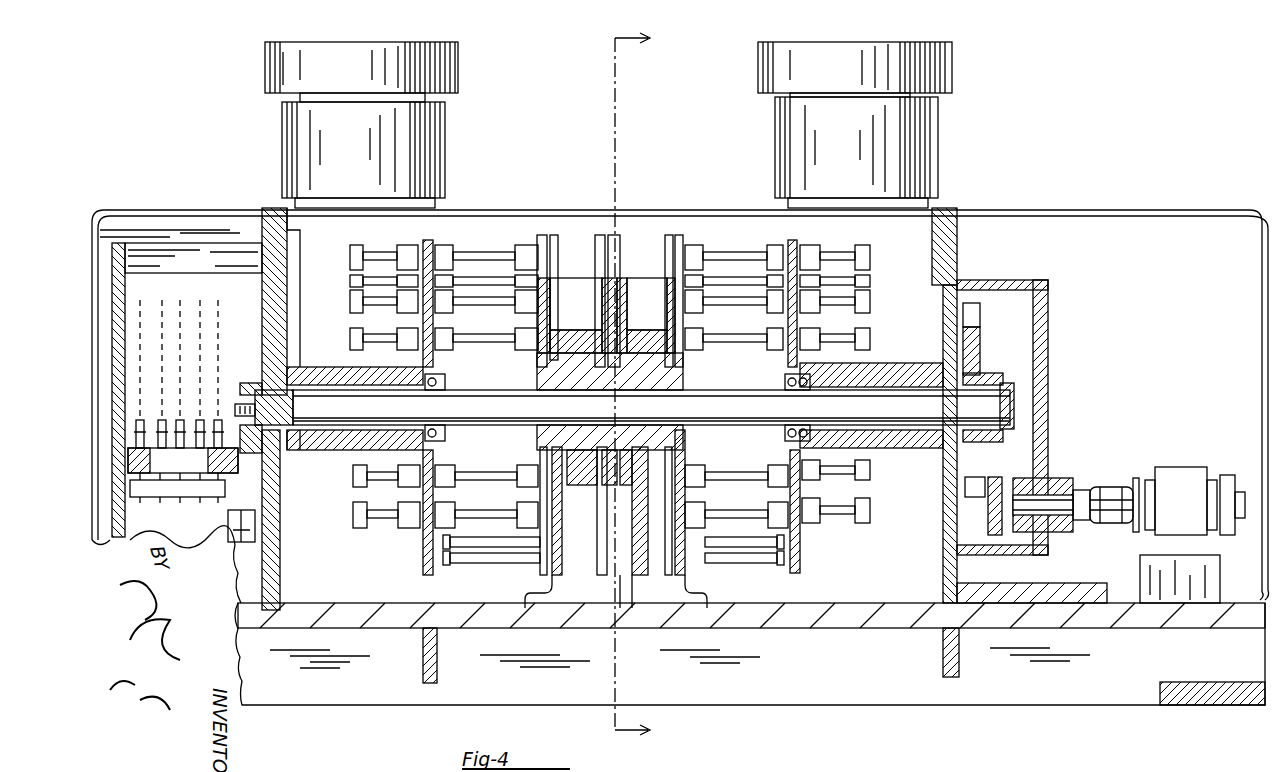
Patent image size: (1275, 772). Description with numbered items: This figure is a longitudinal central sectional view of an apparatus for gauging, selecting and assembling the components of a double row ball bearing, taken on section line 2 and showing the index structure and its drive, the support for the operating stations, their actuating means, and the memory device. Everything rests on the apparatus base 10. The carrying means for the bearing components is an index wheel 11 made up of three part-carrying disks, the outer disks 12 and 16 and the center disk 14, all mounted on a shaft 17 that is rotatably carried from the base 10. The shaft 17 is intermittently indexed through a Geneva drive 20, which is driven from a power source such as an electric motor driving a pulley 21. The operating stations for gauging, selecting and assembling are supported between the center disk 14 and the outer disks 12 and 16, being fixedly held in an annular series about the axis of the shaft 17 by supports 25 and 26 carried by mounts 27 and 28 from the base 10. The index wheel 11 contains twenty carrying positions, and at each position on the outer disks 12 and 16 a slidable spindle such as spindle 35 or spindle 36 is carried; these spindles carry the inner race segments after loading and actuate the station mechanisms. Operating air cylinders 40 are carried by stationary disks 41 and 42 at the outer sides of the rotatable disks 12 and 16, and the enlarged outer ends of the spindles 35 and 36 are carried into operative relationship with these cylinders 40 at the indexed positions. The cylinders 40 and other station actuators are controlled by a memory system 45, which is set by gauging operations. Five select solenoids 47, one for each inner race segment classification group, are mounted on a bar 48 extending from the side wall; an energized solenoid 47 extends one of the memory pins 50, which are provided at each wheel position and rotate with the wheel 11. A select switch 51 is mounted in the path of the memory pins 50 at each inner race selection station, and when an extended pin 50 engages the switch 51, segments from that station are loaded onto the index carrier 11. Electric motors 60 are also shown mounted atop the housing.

The section line 2 is at (641, 387).
The apparatus base 10 is at (890, 690).
The index wheel 11 is at (514, 583).
The part-carrying disk 12 is at (547, 235).
The center disk 14 is at (603, 235).
The part-carrying disk 16 is at (672, 235).
The shaft 17 is at (624, 401).
The Geneva drive 20 is at (1001, 465).
The pulley 21 is at (1222, 478).
The support 25 is at (577, 315).
The support 26 is at (646, 315).
The mount 27 is at (573, 511).
The mount 28 is at (637, 511).
The spindle 35 is at (490, 342).
The spindle 36 is at (738, 340).
The operating air cylinder 40 is at (366, 258).
The stationary disk 41 is at (423, 318).
The stationary disk 42 is at (797, 316).
The memory system 45 is at (150, 505).
The select solenoid 47 is at (160, 408).
The bar 48 is at (226, 445).
The memory pin 50 is at (190, 520).
The select switch 51 is at (255, 521).
The motor 60 is at (268, 70).